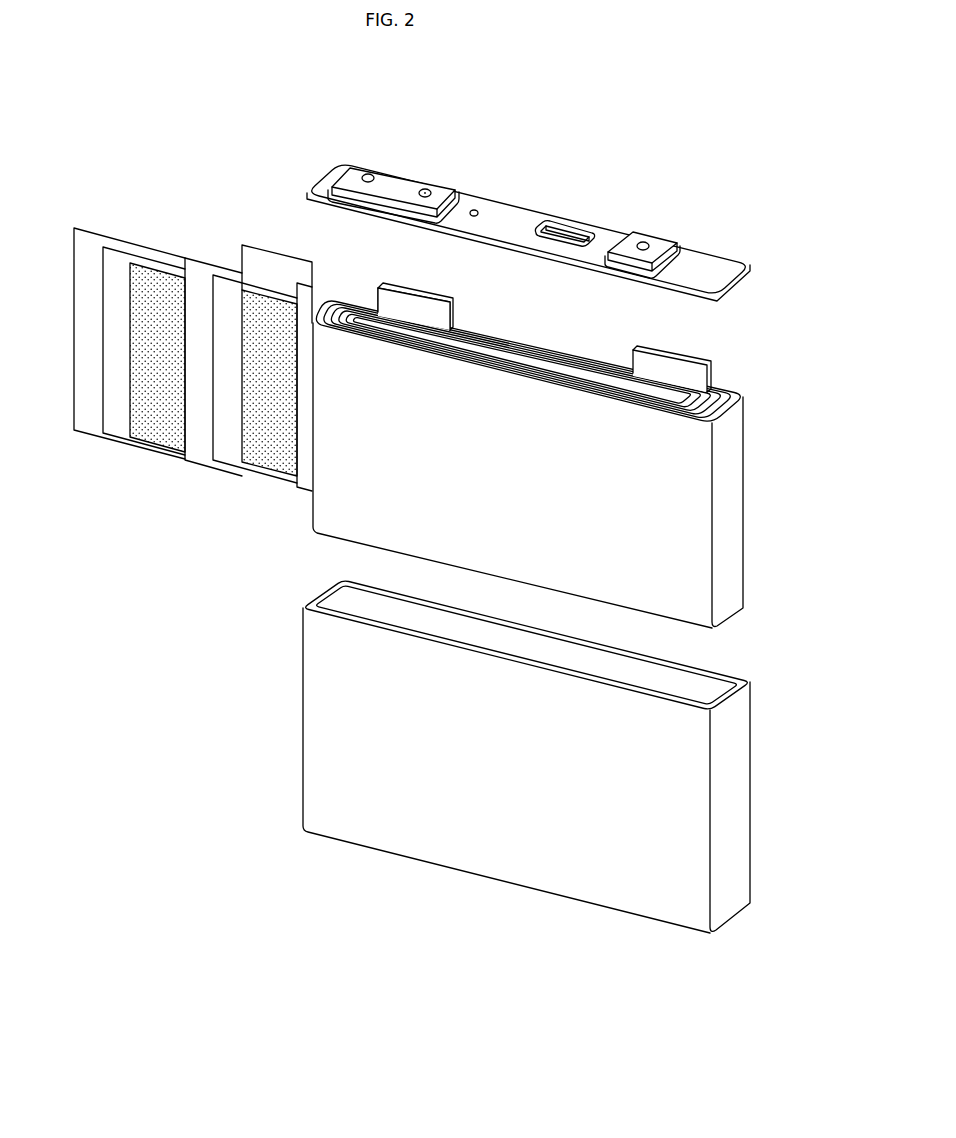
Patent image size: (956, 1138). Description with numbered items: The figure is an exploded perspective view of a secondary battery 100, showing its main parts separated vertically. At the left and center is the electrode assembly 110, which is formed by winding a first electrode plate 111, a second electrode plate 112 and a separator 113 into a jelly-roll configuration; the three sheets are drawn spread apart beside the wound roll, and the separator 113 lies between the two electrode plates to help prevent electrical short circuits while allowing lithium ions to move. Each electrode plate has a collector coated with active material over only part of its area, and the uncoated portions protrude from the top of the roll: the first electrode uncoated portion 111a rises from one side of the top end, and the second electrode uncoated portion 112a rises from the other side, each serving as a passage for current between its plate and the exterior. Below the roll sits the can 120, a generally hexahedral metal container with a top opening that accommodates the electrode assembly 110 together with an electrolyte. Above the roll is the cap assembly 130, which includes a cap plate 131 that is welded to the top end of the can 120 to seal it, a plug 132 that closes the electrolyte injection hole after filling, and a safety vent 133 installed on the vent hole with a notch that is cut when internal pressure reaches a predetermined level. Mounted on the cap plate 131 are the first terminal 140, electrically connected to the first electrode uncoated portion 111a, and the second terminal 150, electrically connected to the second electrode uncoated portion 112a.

The secondary battery 100 is at (49, 90).
The electrode assembly 110 is at (732, 519).
The first electrode plate 111 is at (225, 287).
The first electrode uncoated portion 111a is at (415, 293).
The second electrode plate 112 is at (117, 265).
The second electrode uncoated portion 112a is at (677, 355).
The separator 113 is at (307, 473).
The can 120 is at (748, 815).
The cap assembly 130 is at (532, 208).
The cap plate 131 is at (722, 263).
The plug 132 is at (476, 208).
The safety vent 133 is at (567, 240).
The first terminal 140 is at (399, 177).
The second terminal 150 is at (658, 242).